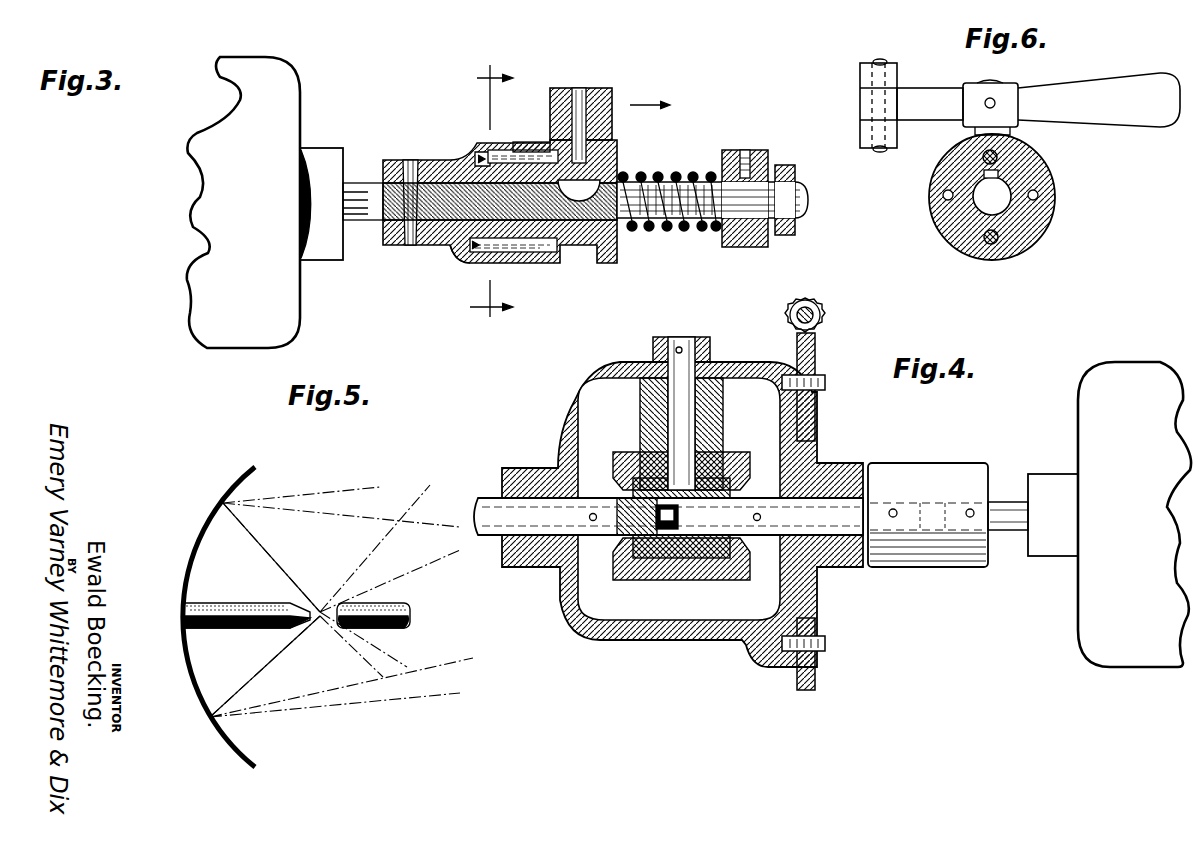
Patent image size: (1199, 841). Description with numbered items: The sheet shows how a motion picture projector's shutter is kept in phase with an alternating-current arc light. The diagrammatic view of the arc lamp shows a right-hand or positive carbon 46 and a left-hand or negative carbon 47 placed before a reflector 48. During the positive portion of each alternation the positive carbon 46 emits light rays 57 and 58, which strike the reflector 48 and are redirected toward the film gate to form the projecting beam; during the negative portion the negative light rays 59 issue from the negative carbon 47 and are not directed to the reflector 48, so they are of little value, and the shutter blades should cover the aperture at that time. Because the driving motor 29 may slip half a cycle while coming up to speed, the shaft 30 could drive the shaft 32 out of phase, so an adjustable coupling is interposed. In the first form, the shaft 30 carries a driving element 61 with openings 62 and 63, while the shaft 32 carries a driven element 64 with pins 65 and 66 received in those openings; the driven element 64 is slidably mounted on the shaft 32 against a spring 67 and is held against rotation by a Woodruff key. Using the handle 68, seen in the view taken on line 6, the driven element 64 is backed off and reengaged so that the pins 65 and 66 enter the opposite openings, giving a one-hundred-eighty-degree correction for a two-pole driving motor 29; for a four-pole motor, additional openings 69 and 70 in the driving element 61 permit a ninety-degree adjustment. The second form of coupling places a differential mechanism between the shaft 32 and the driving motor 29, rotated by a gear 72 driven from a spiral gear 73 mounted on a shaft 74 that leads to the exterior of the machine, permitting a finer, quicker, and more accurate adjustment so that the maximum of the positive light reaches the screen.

In FIG. 3, the driving motor 29 is at (281, 138).
In FIG. 4, the driving motor 29 is at (1097, 392).
In FIG. 3, the shaft 30 is at (358, 183).
In FIG. 3, the shaft 32 is at (780, 177).
In FIG. 6, the shaft 32 is at (998, 208).
In FIG. 4, the shaft 32 is at (542, 464).
In FIG. 3, the driving element 61 is at (452, 158).
In FIG. 6, the driving element 61 is at (955, 243).
In FIG. 3, the opening 62 is at (484, 146).
In FIG. 3, the opening 63 is at (463, 271).
In FIG. 3, the driven element 64 is at (531, 142).
In FIG. 3, the pin 65 is at (496, 146).
In FIG. 6, the pin 65 is at (1003, 153).
In FIG. 3, the pin 66 is at (527, 263).
In FIG. 6, the pin 66 is at (1002, 240).
In FIG. 3, the spring 67 is at (658, 174).
In FIG. 3, the handle 68 is at (598, 88).
In FIG. 6, the handle 68 is at (1046, 90).
In FIG. 6, the opening 69 is at (943, 198).
In FIG. 6, the opening 70 is at (1040, 195).
In FIG. 4, the gear 72 is at (820, 358).
In FIG. 4, the spiral gear 73 is at (832, 321).
In FIG. 4, the shaft 74 is at (784, 323).
In FIG. 3, the line 6- 6 is at (496, 193).
In FIG. 5, the positive carbon 46 is at (397, 600).
In FIG. 5, the negative carbon 47 is at (272, 602).
In FIG. 5, the reflector 48 is at (194, 672).
In FIG. 5, the light rays 57 is at (287, 652).
In FIG. 5, the light rays 58 is at (330, 535).
In FIG. 5, the negative light rays 59 is at (372, 549).